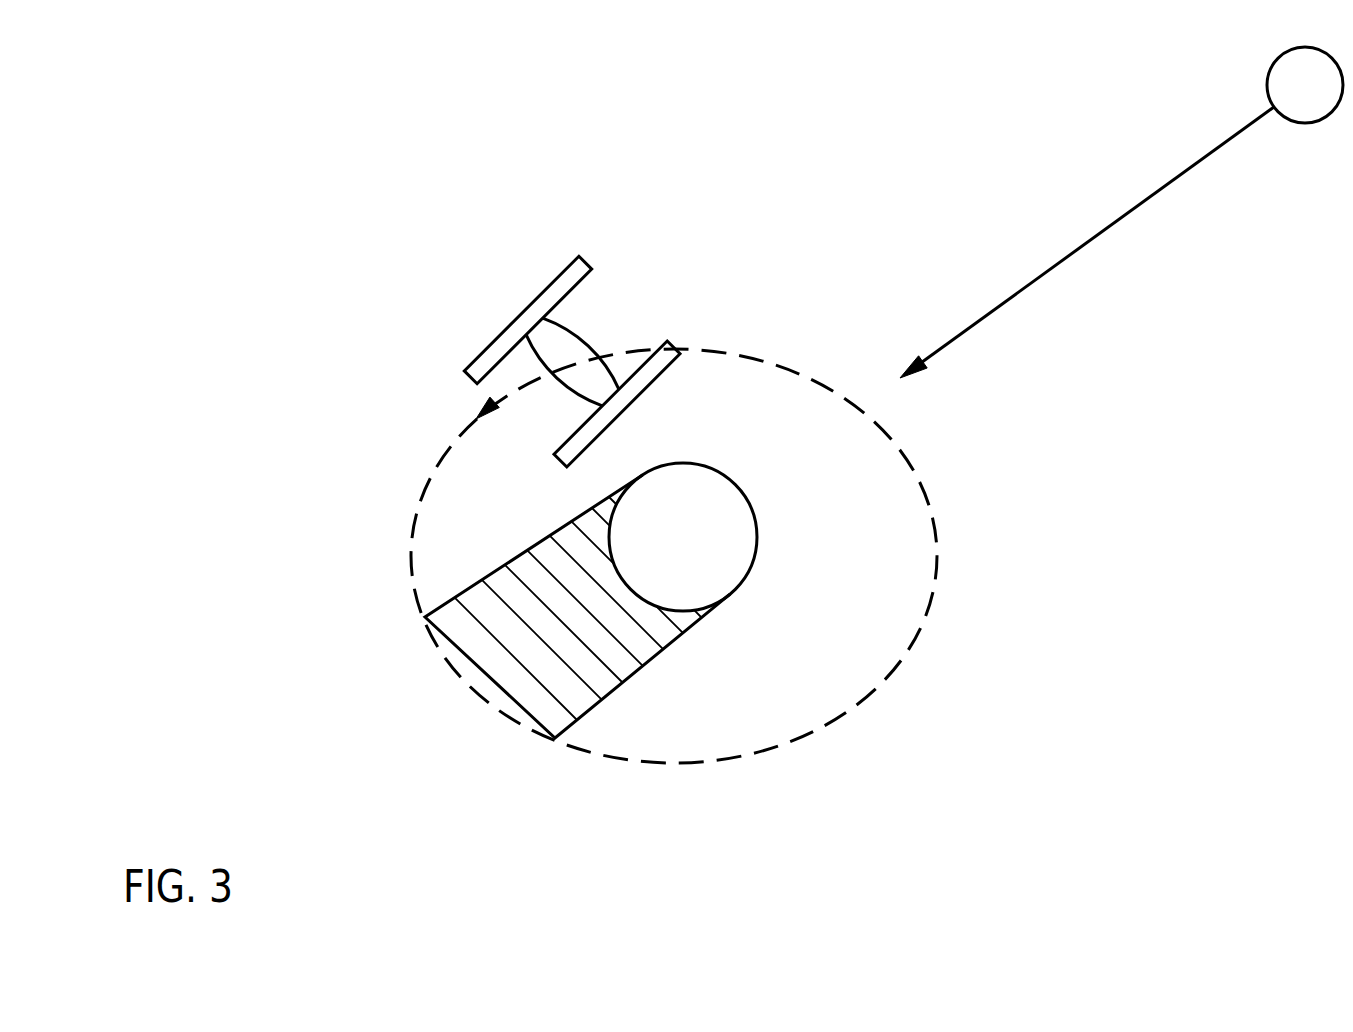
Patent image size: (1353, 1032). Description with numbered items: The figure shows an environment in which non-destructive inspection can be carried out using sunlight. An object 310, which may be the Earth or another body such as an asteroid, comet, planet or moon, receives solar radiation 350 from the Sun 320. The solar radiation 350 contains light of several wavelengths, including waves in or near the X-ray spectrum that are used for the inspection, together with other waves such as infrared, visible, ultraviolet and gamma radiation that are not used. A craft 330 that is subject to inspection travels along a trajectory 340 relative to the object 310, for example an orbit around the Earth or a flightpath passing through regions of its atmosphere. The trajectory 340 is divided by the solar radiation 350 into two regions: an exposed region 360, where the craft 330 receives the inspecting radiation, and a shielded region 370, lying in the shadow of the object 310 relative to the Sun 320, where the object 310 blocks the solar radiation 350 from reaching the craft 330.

The object 310 is at (665, 550).
The Sun 320 is at (1287, 96).
The craft 330 is at (547, 300).
The trajectory 340 is at (937, 550).
The solar radiation 350 is at (1115, 225).
The exposed region 360 is at (898, 492).
The shielded region 370 is at (487, 658).